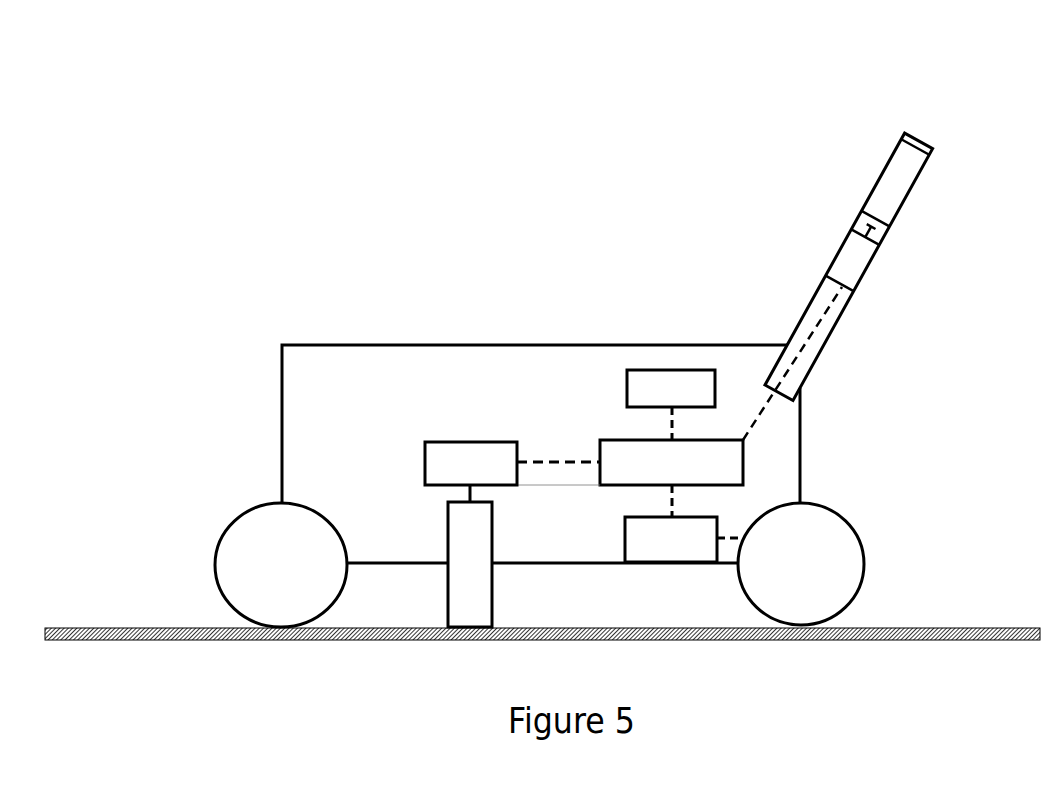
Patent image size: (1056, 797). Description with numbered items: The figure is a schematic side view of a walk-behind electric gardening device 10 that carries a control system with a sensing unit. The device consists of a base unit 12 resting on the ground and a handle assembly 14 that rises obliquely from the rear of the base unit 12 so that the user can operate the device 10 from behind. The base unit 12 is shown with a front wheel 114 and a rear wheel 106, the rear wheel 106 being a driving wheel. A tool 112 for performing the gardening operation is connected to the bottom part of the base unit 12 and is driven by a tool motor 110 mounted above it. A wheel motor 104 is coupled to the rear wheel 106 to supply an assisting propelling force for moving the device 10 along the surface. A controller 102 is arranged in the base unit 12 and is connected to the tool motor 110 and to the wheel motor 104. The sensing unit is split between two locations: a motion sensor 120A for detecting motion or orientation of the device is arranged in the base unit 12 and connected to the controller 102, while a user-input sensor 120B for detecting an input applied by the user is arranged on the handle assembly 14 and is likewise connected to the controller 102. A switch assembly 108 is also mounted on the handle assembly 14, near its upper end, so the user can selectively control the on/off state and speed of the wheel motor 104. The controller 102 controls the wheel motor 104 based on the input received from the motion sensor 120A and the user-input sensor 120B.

The walk-behind electric gardening device 10 is at (828, 48).
The base unit 12 is at (818, 437).
The handle assembly 14 is at (896, 283).
The controller 102 is at (606, 480).
The wheel motor 104 is at (662, 560).
The rear wheel 106 is at (868, 564).
The switch assembly 108 is at (922, 168).
The tool motor 110 is at (471, 433).
The tool 112 is at (486, 590).
The front wheel 114 is at (218, 560).
The motion sensor 120A is at (627, 384).
The user-input sensor 120B is at (876, 250).